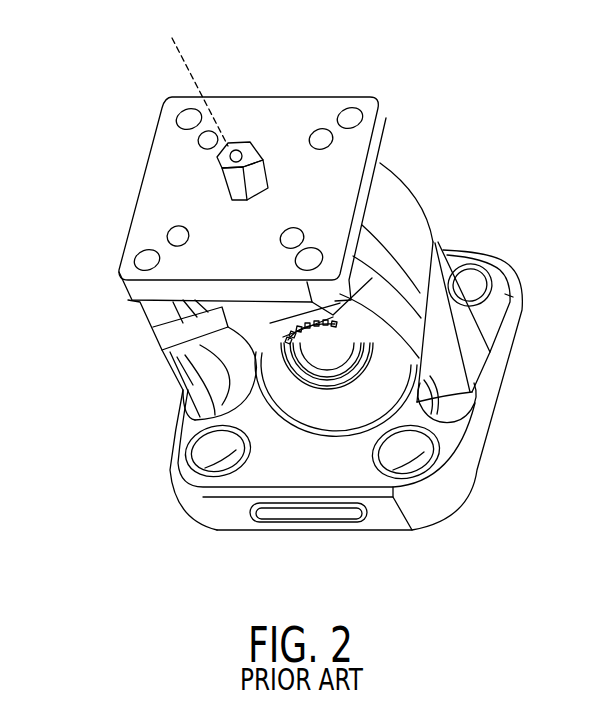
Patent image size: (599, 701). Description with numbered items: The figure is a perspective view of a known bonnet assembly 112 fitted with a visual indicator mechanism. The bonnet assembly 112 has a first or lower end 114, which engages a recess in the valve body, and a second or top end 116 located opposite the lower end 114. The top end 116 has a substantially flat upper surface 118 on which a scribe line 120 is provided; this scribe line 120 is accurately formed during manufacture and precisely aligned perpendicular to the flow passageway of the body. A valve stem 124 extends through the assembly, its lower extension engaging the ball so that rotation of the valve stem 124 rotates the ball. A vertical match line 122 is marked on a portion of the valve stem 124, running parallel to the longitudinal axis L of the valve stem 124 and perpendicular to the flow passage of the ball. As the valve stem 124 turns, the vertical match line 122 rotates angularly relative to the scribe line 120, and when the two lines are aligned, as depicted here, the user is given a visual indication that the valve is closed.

The bonnet assembly 112 is at (133, 320).
The lower end 114 is at (408, 538).
The top end 116 is at (368, 94).
The upper surface 118 is at (162, 177).
The scribe line 120 is at (243, 223).
The vertical match line 122 is at (228, 190).
The valve stem 124 is at (233, 90).
The longitudinal axis L is at (196, 79).